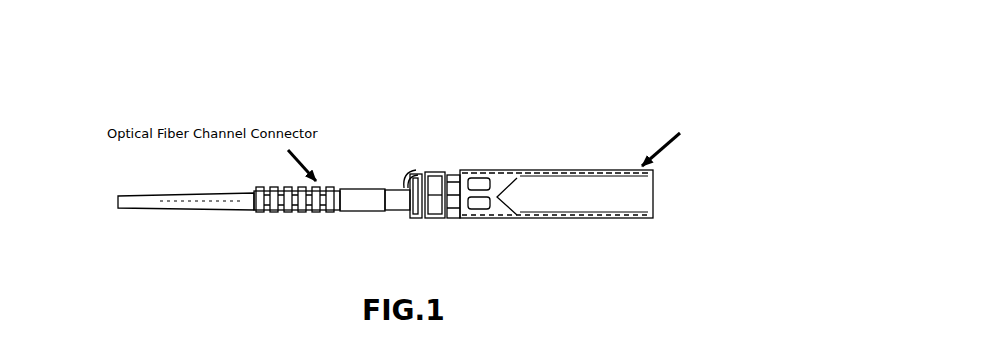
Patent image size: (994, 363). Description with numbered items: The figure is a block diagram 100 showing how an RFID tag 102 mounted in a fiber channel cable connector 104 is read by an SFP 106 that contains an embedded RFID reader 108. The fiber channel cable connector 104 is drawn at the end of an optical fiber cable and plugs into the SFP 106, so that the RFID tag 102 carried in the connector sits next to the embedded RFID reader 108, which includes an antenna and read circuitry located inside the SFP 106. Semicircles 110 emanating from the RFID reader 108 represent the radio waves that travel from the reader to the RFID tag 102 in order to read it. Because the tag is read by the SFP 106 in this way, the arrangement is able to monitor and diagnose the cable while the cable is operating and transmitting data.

The block diagram 100 is at (76, 106).
The RFID tag 102 is at (376, 183).
The fiber channel cable connector 104 is at (226, 229).
The SFP 106 is at (564, 235).
The embedded RFID reader 108 is at (437, 170).
The semicircles 110 is at (411, 164).